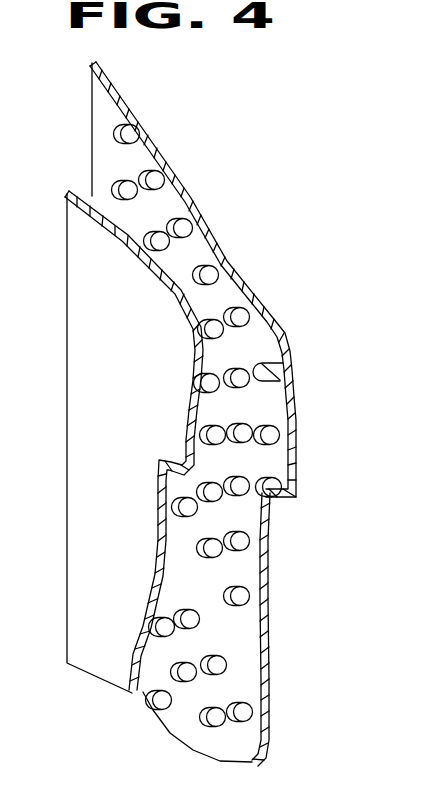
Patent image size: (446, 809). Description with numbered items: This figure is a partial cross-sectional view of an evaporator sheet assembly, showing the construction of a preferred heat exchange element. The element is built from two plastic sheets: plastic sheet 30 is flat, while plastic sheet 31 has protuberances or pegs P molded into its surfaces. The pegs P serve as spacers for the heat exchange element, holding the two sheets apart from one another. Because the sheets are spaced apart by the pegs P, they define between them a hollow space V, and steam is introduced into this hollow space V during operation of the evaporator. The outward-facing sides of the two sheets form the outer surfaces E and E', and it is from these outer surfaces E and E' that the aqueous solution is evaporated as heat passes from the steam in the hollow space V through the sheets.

The plastic sheet 30 is at (68, 190).
The plastic sheet 31 is at (198, 279).
The hollow space V is at (286, 346).
The pegs P is at (224, 426).
The outer surface E is at (99, 378).
The outer surface E' is at (228, 629).